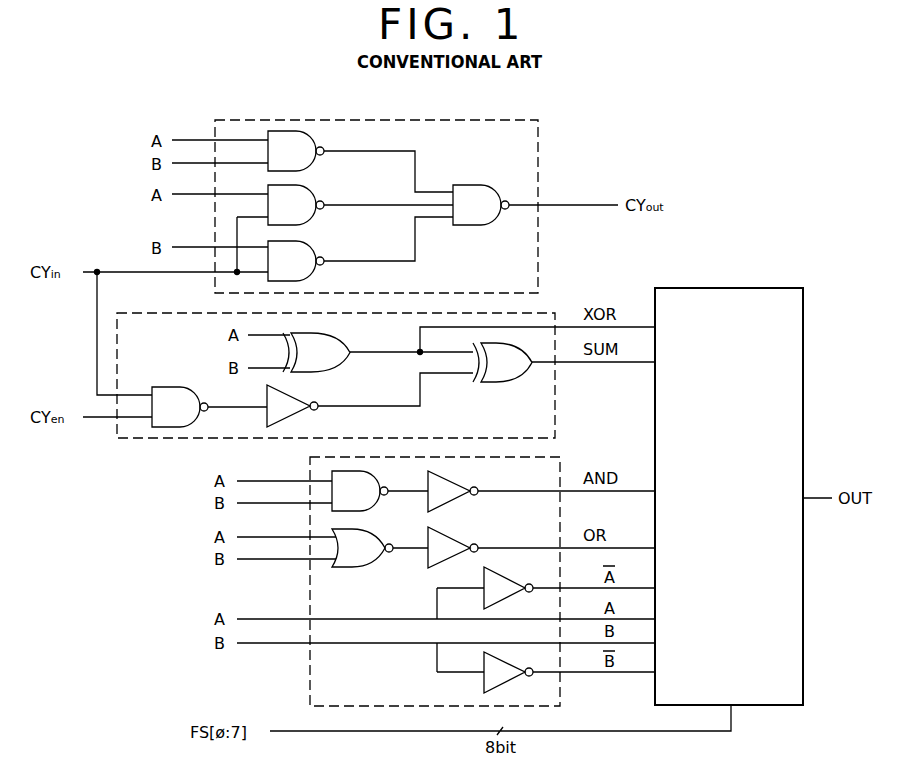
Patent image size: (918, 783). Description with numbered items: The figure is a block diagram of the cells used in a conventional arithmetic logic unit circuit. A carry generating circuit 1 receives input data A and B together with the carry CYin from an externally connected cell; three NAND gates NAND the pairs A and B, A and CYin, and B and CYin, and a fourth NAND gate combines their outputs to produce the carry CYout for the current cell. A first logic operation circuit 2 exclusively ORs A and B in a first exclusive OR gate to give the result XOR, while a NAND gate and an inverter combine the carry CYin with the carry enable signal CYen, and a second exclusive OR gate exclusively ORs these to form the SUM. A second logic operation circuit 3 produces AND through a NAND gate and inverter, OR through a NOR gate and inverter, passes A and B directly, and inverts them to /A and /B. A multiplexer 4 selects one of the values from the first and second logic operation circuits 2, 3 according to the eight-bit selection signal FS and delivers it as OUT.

The carry generating circuit 1 is at (538, 165).
The first logic operation circuit 2 is at (552, 303).
The second logic operation circuit 3 is at (310, 675).
The multiplexer 4 is at (803, 425).